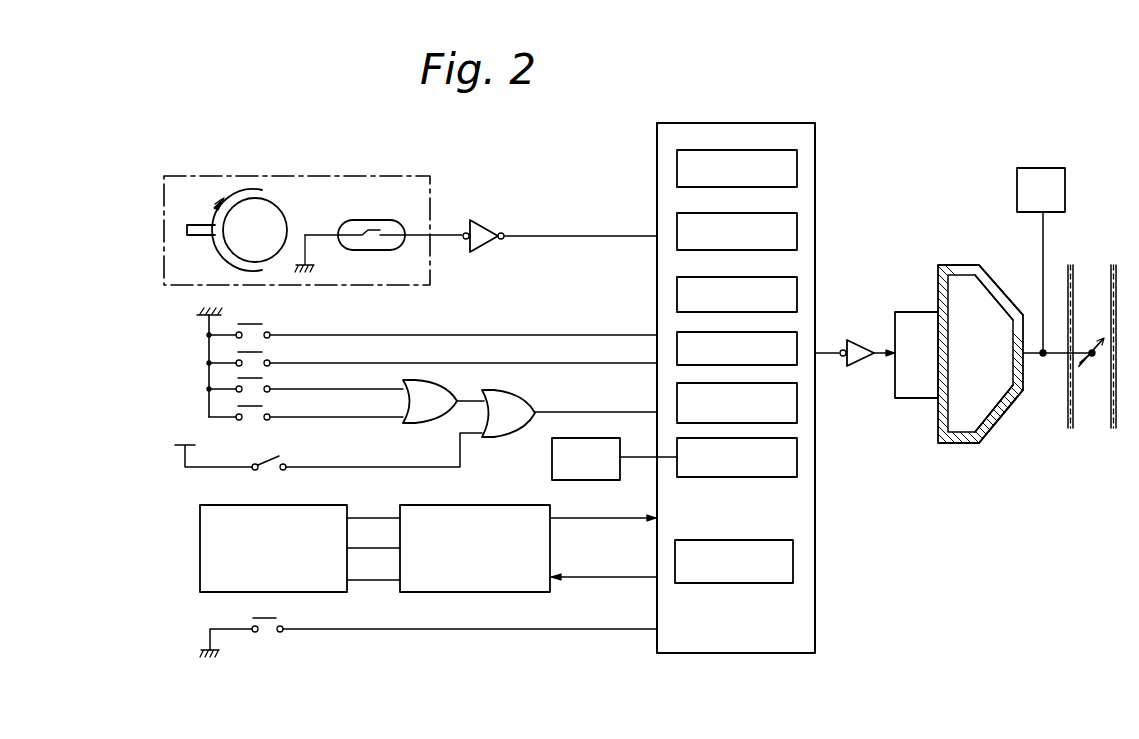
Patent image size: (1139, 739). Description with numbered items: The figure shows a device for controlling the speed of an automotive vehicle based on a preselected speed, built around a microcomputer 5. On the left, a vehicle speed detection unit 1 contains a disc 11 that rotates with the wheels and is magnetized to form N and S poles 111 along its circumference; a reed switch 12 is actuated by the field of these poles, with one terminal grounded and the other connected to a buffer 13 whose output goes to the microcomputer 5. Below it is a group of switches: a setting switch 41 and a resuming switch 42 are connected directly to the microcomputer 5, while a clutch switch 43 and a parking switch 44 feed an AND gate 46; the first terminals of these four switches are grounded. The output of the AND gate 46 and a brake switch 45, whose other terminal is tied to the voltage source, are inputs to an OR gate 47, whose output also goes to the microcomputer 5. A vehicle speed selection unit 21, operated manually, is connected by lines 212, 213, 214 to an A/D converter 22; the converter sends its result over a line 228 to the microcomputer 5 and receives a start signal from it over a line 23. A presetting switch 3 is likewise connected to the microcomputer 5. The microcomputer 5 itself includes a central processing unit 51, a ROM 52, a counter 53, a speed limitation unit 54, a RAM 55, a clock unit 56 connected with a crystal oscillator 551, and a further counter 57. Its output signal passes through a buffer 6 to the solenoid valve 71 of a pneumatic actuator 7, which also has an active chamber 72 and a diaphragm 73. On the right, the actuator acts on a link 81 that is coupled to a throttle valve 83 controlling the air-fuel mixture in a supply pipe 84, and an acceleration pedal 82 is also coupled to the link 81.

The vehicle speed detection unit 1 is at (391, 176).
The disc 11 is at (230, 250).
The magnetic poles 111 is at (264, 206).
The reed switch 12 is at (378, 233).
The buffer 13 is at (560, 224).
The selected speed presetting switch 3 is at (276, 618).
The setting switch 41 is at (262, 324).
The resuming switch 42 is at (262, 352).
The clutch switch 43 is at (262, 378).
The parking switch 44 is at (262, 406).
The brake switch 45 is at (282, 455).
The AND gate 46 is at (443, 393).
The OR gate 47 is at (569, 406).
The microcomputer 5 is at (790, 123).
The central processing unit 51 is at (797, 162).
The ROM 52 is at (797, 225).
The counter 53 is at (797, 280).
The speed limitation unit 54 is at (797, 360).
The RAM 55 is at (797, 409).
The clock unit 56 is at (797, 457).
The counter 57 is at (793, 560).
The crystal oscillator 551 is at (575, 438).
The A/D converter 22 is at (202, 505).
The vehicle speed selection unit 21 is at (414, 505).
The line 212 is at (354, 518).
The line 213 is at (354, 548).
The line 214 is at (354, 580).
The line 228 is at (572, 516).
The line 23 is at (575, 578).
The buffer 6 is at (862, 344).
The solenoid valve 71 is at (902, 312).
The pneumatic actuator 7 is at (941, 265).
The active chamber 72 is at (978, 292).
The diaphragm 73 is at (1006, 410).
The acceleration pedal 82 is at (1026, 168).
The link 81 is at (1044, 356).
The throttle valve 83 is at (1100, 362).
The supply pipe 84 is at (1068, 428).